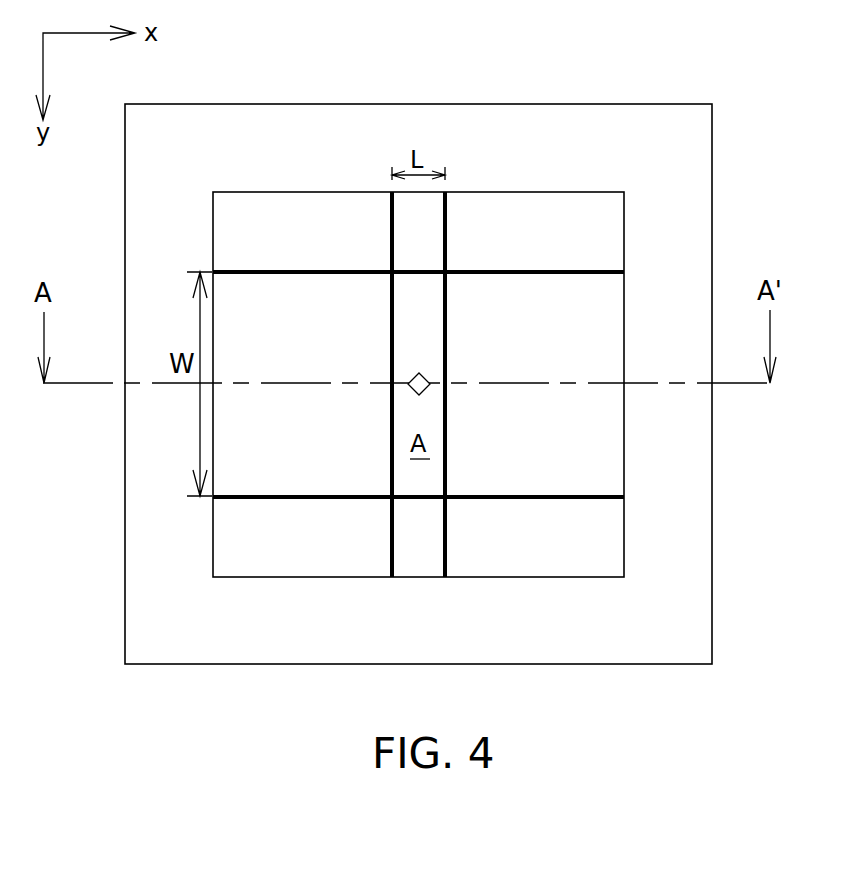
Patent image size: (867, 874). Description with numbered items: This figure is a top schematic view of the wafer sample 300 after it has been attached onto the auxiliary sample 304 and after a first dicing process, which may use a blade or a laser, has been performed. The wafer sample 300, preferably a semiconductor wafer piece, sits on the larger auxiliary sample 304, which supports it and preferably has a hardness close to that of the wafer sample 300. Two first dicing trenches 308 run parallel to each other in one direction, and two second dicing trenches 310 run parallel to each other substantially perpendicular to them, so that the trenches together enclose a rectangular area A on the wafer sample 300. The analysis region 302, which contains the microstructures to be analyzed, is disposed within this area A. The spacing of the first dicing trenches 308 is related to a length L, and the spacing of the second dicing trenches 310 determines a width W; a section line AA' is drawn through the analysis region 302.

The wafer sample 300 is at (620, 229).
The analysis region 302 is at (427, 375).
The auxiliary sample 304 is at (620, 142).
The first dicing trenches 308 is at (447, 540).
The second dicing trenches 310 is at (560, 272).